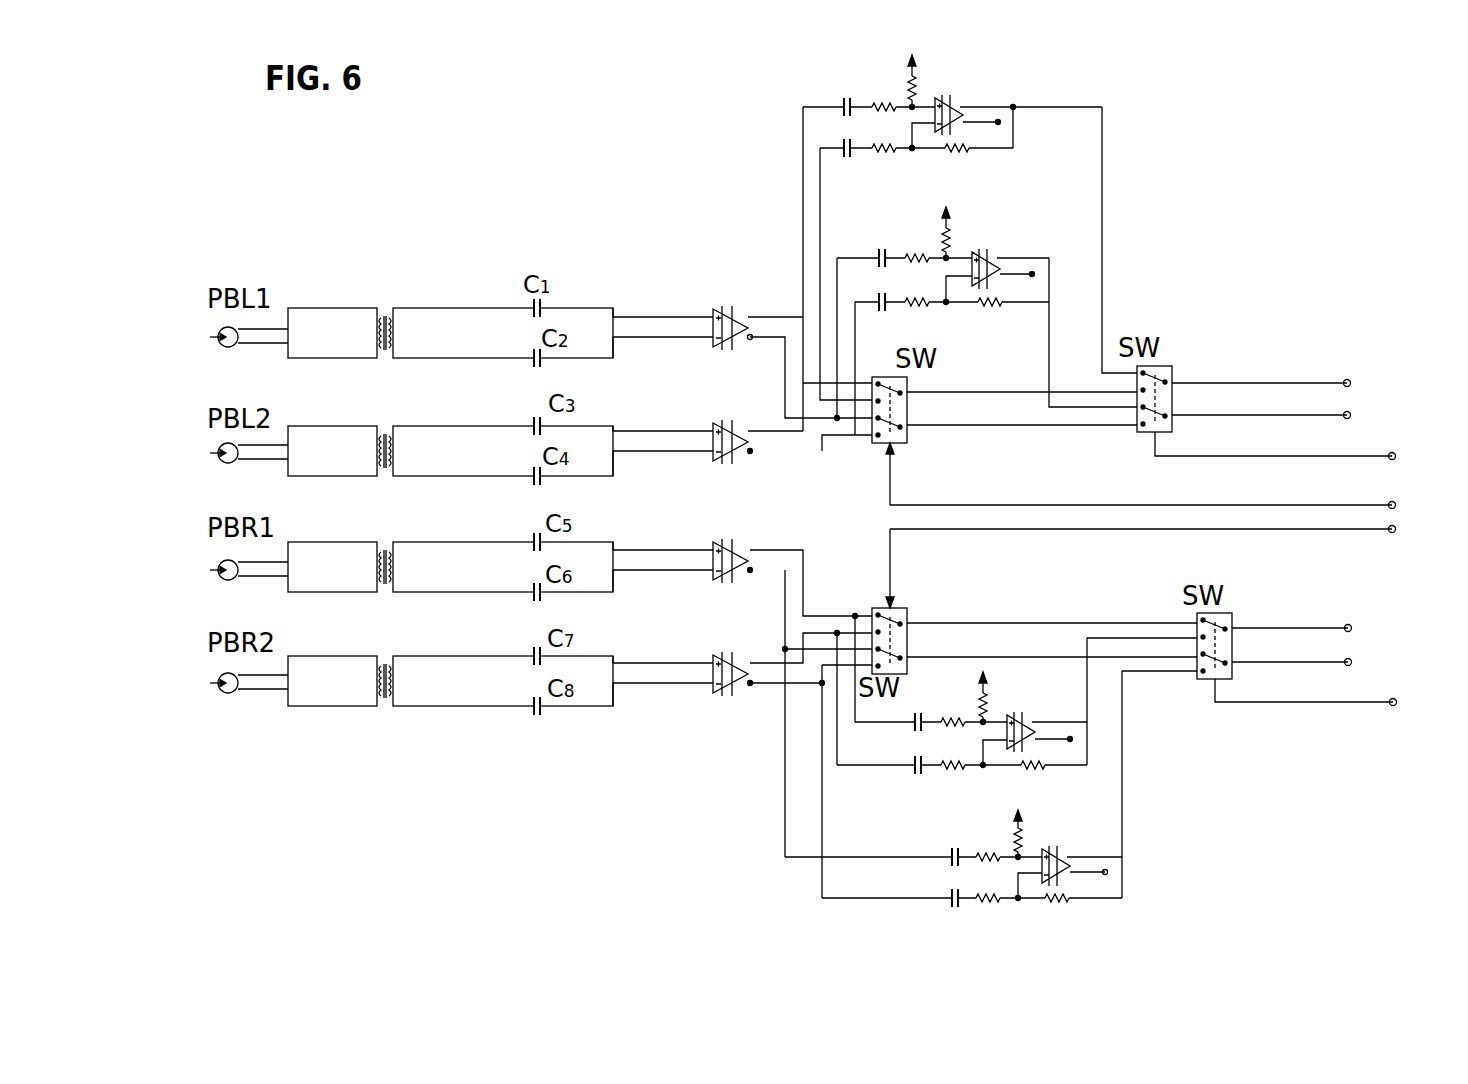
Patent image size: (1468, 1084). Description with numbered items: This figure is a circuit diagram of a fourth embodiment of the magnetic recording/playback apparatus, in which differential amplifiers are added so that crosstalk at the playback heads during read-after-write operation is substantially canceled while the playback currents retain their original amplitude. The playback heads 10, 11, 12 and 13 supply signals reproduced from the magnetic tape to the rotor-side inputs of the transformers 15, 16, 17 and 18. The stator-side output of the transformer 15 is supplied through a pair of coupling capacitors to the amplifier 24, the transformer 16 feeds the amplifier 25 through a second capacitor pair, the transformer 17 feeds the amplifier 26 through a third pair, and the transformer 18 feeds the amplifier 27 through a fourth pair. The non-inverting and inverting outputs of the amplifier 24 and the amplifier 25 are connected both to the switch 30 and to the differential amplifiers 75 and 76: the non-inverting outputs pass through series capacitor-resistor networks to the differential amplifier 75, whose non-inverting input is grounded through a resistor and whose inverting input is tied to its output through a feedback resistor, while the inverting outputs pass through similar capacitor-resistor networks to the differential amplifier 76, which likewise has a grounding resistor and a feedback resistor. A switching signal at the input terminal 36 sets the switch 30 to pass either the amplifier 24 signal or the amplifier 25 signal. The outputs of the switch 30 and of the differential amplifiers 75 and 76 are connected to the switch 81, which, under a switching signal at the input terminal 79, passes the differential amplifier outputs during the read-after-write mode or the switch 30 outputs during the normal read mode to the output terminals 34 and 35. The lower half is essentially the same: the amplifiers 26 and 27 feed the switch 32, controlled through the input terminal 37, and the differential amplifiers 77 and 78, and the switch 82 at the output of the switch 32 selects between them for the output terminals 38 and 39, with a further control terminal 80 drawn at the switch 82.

The playback head 10 is at (218, 332).
The playback head 11 is at (218, 448).
The playback head 12 is at (218, 566).
The playback head 13 is at (218, 680).
The transformer 15 is at (387, 308).
The transformer 16 is at (387, 426).
The transformer 17 is at (387, 542).
The transformer 18 is at (387, 656).
The amplifier 24 is at (722, 350).
The amplifier 25 is at (726, 464).
The amplifier 26 is at (728, 582).
The amplifier 27 is at (724, 696).
The switch 30 is at (905, 444).
The switch 32 is at (906, 608).
The output terminal 34 is at (1351, 382).
The output terminal 35 is at (1351, 415).
The input terminal 36 is at (1396, 504).
The input terminal 37 is at (1396, 531).
The output terminal 38 is at (1352, 627).
The output terminal 39 is at (1352, 662).
The differential amplifier 75 is at (952, 98).
The differential amplifier 76 is at (990, 252).
The differential amplifier 77 is at (1020, 715).
The differential amplifier 78 is at (1058, 849).
The input terminal 79 is at (1396, 455).
The switch control terminal 80 is at (1396, 705).
The switch 81 is at (1166, 366).
The switch 82 is at (1233, 613).